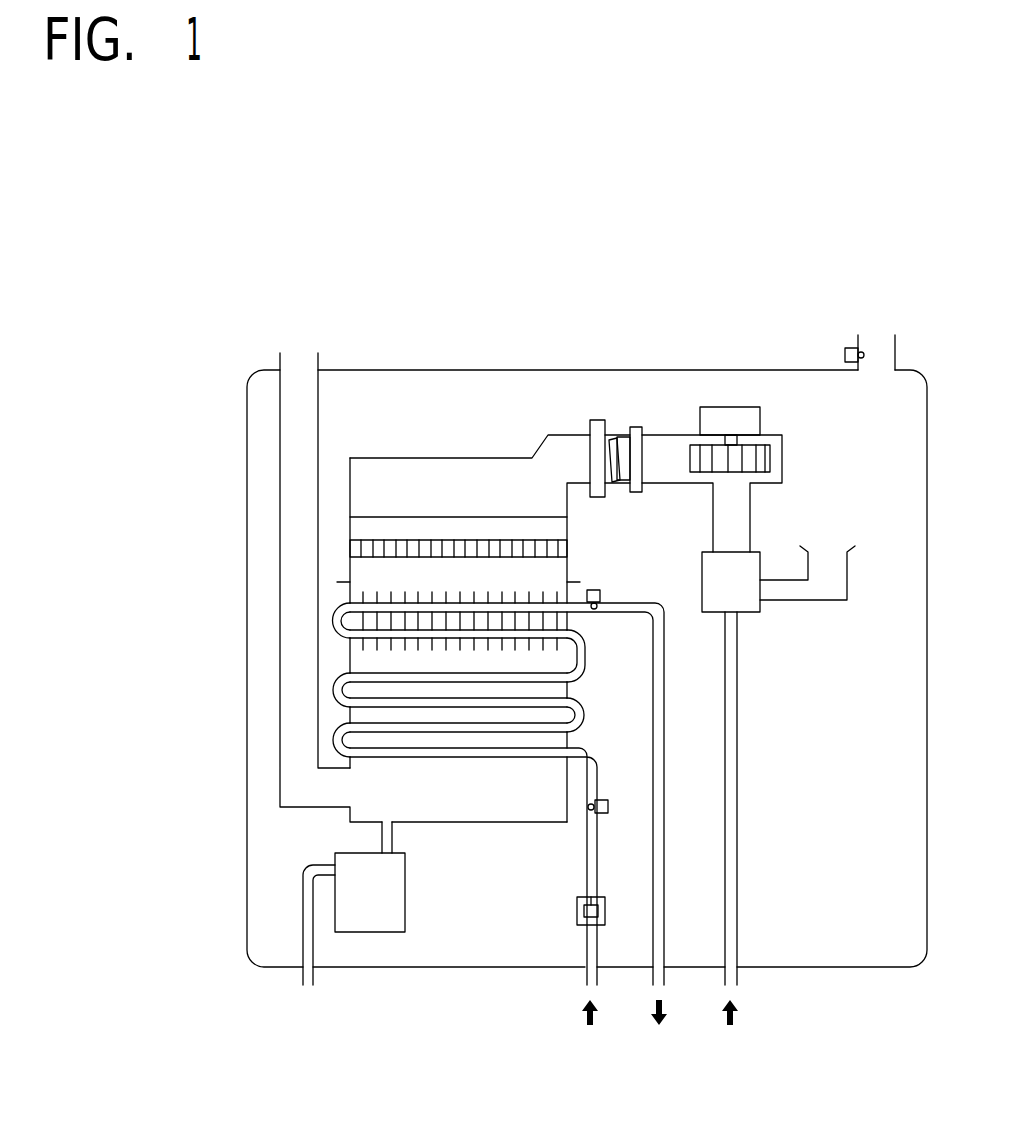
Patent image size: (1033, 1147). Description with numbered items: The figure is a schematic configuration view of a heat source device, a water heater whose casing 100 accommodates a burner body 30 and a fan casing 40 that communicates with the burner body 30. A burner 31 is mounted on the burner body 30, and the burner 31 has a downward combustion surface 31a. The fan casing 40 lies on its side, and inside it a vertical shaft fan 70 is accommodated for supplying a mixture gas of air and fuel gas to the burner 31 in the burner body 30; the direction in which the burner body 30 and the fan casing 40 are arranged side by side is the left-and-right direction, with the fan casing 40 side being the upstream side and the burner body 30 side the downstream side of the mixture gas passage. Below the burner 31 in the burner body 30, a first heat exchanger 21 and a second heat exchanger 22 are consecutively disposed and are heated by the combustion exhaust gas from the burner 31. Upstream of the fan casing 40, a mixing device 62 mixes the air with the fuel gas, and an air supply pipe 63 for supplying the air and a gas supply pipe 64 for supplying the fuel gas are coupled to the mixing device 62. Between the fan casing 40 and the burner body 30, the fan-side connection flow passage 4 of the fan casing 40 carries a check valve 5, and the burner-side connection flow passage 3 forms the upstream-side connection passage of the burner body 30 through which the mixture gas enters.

The casing 100 is at (247, 460).
The burner body 30 is at (400, 458).
The burner 31 is at (458, 540).
The combustion surface 31a is at (388, 557).
The first heat exchanger 21 is at (332, 620).
The second heat exchanger 22 is at (332, 683).
The burner-side connection flow passage 3 is at (578, 458).
The check valve 5 is at (610, 455).
The fan-side connection flow passage 4 is at (654, 458).
The fan casing 40 is at (773, 433).
The fan 70 is at (770, 463).
The mixing device 62 is at (747, 612).
The air supply pipe 63 is at (850, 580).
The gas supply pipe 64 is at (737, 880).